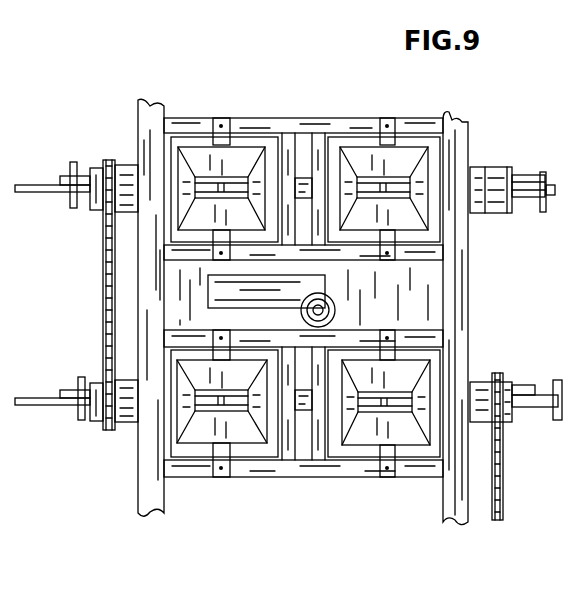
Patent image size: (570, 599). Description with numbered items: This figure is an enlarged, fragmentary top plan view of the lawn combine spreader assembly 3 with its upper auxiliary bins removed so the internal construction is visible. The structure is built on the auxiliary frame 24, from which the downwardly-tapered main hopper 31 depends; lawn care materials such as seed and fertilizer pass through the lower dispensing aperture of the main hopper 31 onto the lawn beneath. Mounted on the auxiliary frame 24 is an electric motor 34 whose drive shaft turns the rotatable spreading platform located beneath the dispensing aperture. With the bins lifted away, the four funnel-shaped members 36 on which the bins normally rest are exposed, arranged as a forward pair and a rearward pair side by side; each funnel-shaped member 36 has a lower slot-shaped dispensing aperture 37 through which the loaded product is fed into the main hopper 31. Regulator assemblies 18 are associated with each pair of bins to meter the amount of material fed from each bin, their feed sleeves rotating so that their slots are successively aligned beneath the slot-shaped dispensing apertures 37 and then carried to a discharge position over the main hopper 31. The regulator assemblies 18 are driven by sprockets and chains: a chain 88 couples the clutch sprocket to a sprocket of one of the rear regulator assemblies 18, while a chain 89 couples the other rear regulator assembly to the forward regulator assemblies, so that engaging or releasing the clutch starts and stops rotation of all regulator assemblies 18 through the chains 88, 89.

The material distribution unit 3 is at (518, 340).
The regulator assembly 18 is at (93, 148).
The auxiliary frame 24 is at (462, 258).
The main hopper 31 is at (428, 308).
The electric motor 34 is at (327, 283).
The funnel-shaped member 36 is at (243, 153).
The slot-shaped dispensing aperture 37 is at (207, 178).
The chain 88 is at (500, 480).
The chain 89 is at (103, 282).